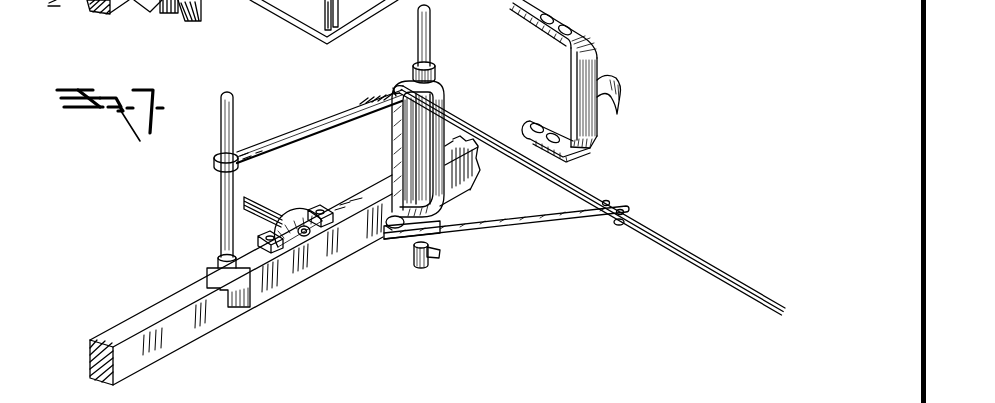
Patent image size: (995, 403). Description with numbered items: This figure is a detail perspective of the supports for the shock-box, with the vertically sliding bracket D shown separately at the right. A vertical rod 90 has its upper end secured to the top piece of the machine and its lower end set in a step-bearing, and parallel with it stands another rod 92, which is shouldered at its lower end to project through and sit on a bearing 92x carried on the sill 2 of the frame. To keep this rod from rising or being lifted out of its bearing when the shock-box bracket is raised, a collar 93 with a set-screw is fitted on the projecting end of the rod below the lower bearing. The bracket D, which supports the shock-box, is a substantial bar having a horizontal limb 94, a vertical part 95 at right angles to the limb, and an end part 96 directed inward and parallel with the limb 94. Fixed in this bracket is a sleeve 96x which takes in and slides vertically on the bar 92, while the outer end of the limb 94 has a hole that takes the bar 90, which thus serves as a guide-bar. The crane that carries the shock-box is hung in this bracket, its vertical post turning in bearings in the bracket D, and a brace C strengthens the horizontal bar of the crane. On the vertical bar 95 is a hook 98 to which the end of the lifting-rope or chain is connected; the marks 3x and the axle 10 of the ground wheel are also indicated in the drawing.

The end piece 2 is at (447, 193).
The vertical rod 90 is at (223, 221).
The bracket D is at (292, 127).
The axle 10 is at (273, 206).
The rod 92 is at (430, 46).
The sleeve 96x is at (420, 154).
The vertical part 95 is at (441, 181).
The end part 96 is at (534, 126).
The hook 98 is at (633, 94).
The horizontal limb 94 is at (561, 200).
The rod end hook 3x is at (389, 90).
The brace bar C is at (524, 216).
The bearing 92x is at (417, 241).
The collar 93 is at (430, 260).